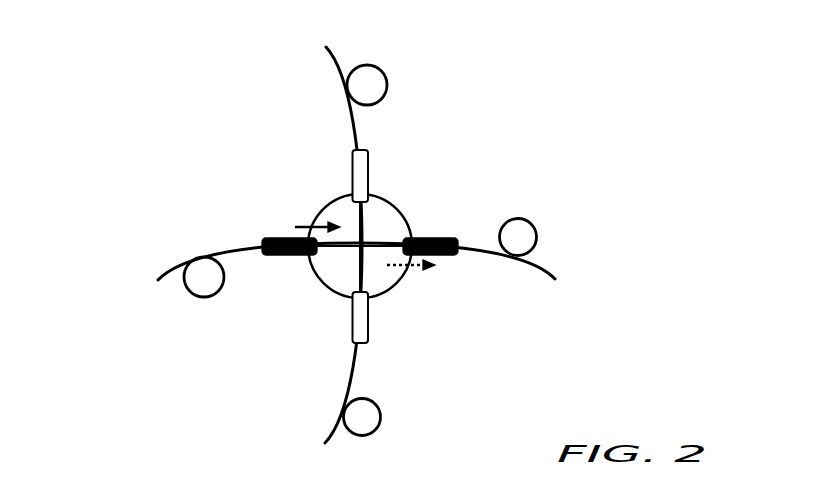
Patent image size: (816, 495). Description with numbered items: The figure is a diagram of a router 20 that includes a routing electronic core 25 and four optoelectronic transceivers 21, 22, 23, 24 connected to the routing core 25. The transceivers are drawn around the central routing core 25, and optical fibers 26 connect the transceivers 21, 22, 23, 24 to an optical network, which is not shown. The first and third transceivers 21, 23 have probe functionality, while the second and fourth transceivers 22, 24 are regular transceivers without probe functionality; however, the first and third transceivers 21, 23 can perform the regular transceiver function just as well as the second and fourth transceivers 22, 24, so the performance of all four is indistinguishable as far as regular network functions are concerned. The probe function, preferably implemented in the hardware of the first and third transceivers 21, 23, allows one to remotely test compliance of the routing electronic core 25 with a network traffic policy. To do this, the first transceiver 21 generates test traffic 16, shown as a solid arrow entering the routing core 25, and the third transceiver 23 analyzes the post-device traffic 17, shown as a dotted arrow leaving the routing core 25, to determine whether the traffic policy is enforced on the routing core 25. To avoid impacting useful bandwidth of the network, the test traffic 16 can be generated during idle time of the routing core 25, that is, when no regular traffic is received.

The router 20 is at (163, 108).
The test traffic 16 is at (307, 226).
The post-device traffic 17 is at (410, 264).
The first transceiver 21 is at (284, 237).
The second transceiver 22 is at (352, 166).
The third transceiver 23 is at (445, 257).
The fourth transceiver 24 is at (358, 320).
The routing electronic core 25 is at (386, 211).
The optical fibers 26 is at (383, 77).